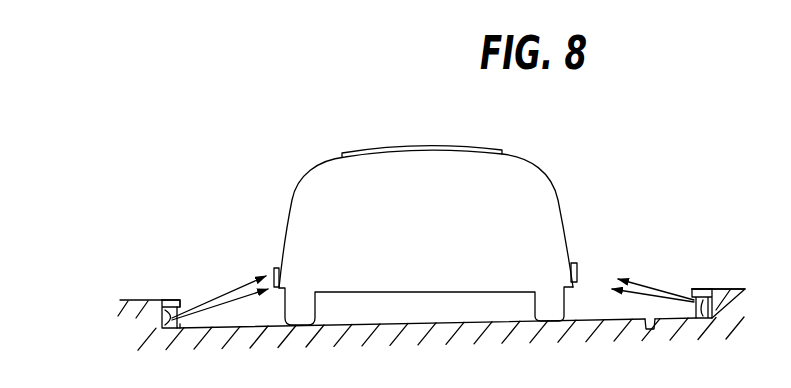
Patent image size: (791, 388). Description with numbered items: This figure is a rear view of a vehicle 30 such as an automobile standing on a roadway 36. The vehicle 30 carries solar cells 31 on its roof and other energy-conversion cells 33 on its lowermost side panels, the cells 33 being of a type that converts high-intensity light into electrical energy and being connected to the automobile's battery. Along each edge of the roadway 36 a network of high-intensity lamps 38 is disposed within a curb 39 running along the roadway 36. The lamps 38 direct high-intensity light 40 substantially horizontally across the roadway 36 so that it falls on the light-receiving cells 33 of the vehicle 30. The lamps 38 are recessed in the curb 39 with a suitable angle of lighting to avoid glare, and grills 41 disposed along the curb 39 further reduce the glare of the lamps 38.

The vehicle 30 is at (284, 186).
The solar cells 31 is at (393, 151).
The energy-conversion cells 33 is at (276, 262).
The roadway 36 is at (223, 327).
The high-intensity lamps 38 is at (165, 328).
The curb 39 is at (170, 300).
The high-intensity light 40 is at (236, 297).
The grills 41 is at (182, 328).